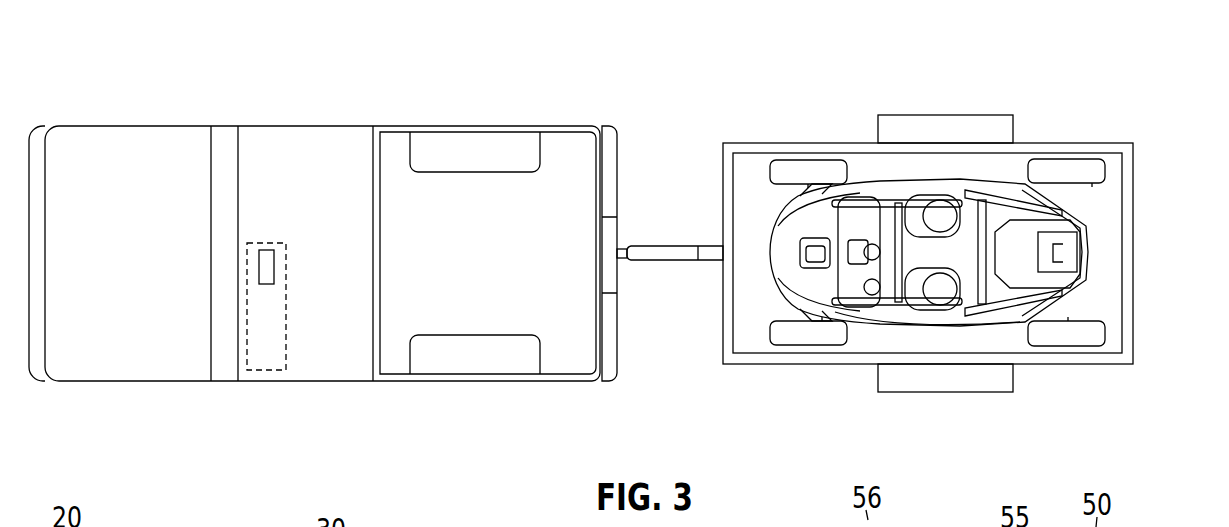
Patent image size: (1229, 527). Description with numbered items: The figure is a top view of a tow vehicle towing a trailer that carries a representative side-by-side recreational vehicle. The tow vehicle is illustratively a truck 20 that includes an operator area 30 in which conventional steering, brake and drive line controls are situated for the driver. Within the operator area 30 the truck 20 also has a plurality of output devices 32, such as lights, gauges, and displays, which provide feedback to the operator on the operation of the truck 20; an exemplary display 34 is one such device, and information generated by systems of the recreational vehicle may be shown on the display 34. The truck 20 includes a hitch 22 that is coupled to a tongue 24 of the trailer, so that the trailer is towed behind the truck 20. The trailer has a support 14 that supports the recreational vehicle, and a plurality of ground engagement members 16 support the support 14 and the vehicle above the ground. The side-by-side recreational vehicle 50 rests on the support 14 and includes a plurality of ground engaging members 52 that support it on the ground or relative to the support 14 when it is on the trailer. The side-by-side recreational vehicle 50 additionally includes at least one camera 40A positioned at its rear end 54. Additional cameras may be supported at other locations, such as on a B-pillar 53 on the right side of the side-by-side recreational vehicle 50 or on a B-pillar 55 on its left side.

The truck 20 is at (508, 104).
The operator area 30 is at (317, 183).
The display 34 is at (268, 249).
The output devices 32 is at (265, 383).
The hitch 22 is at (626, 265).
The tongue 24 is at (675, 245).
The ground engagement members 16 is at (922, 103).
The support 14 is at (755, 340).
The ground engaging members 52 is at (808, 170).
The side-by-side recreational vehicle 50 is at (992, 253).
The B-pillar 53 is at (972, 166).
The rear end 54 is at (1095, 232).
The B-pillar 55 is at (948, 340).
The camera 40A is at (1072, 258).